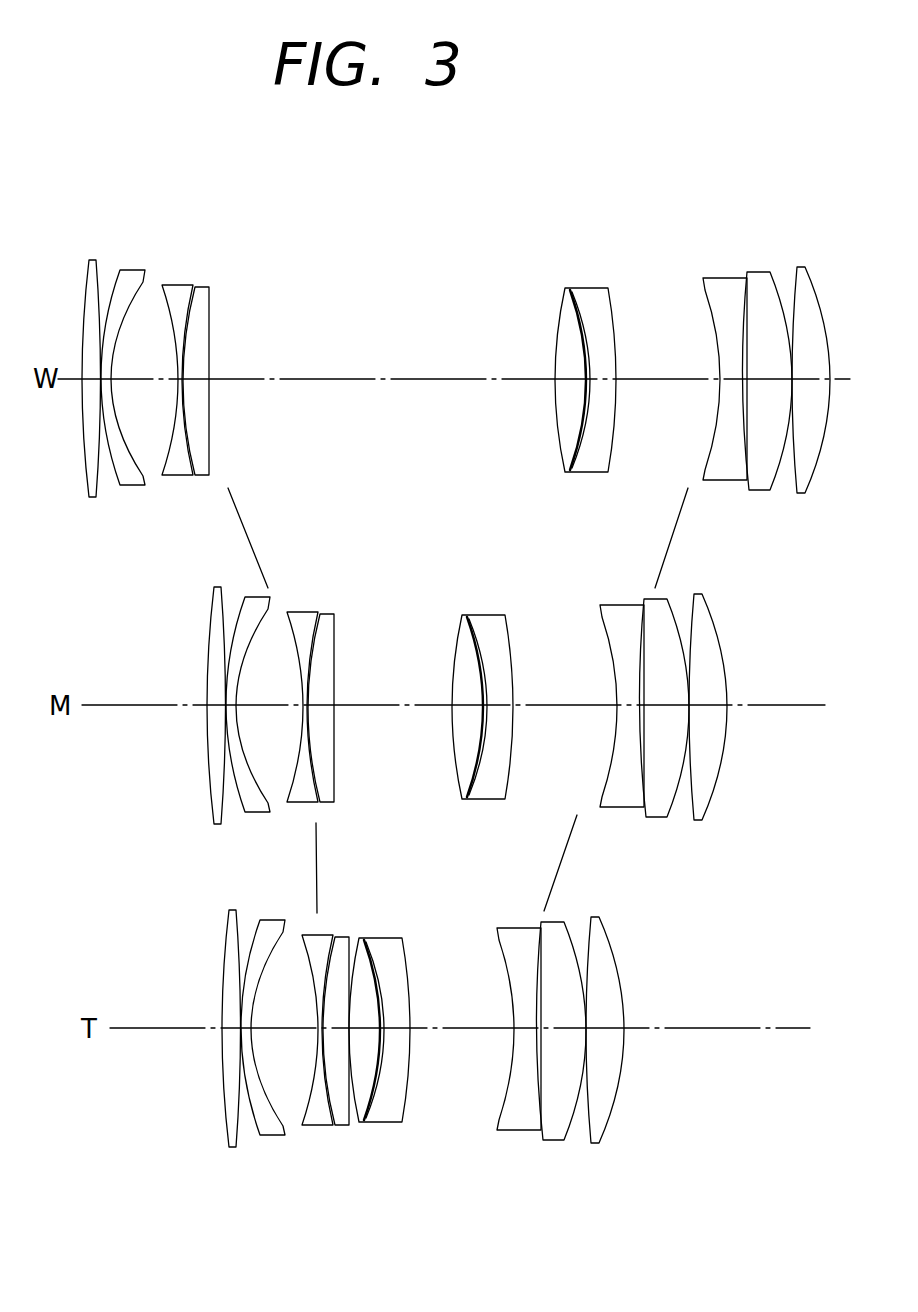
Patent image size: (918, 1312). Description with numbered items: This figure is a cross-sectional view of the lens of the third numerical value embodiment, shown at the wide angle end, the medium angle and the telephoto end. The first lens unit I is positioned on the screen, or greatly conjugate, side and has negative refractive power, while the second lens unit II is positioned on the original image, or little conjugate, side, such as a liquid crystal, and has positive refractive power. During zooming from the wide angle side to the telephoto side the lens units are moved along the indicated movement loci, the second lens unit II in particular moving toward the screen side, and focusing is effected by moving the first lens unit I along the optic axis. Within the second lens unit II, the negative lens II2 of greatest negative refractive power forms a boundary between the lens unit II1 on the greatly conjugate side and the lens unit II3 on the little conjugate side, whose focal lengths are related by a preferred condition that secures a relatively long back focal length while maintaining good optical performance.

The first lens unit I is at (77, 227).
The second lens unit II is at (691, 326).
The lens unit on the greatly conjugate side in the second lens unit II1 is at (556, 252).
The negative lens II2 is at (694, 252).
The lens unit on the little conjugate side in the second lens unit II3 is at (786, 354).